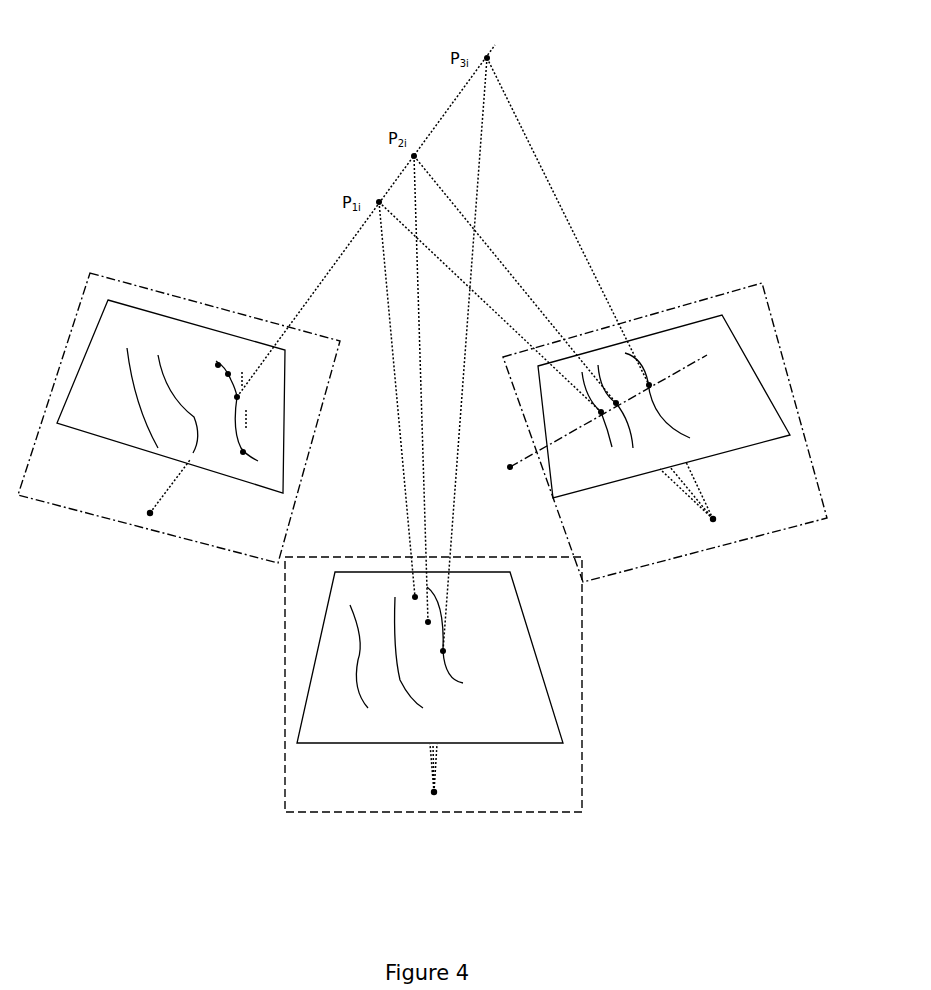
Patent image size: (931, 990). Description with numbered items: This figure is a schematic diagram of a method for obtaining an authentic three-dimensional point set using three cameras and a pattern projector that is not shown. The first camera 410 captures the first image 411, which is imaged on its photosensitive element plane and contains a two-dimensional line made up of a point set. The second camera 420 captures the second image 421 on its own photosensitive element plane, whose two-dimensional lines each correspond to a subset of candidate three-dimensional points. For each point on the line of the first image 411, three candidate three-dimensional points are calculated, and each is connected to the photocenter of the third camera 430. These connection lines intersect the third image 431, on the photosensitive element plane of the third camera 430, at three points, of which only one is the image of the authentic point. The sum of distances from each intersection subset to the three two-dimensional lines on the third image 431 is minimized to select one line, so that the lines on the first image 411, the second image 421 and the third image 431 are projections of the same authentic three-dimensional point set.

The first camera 410 is at (98, 518).
The first image 411 is at (128, 317).
The second camera 420 is at (665, 557).
The second image 421 is at (693, 347).
The third camera 430 is at (355, 817).
The third image 431 is at (530, 705).